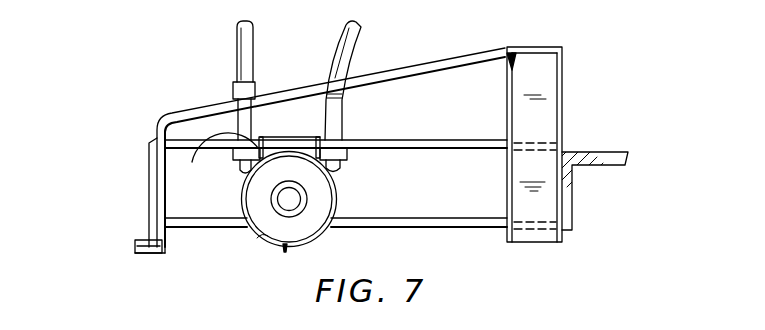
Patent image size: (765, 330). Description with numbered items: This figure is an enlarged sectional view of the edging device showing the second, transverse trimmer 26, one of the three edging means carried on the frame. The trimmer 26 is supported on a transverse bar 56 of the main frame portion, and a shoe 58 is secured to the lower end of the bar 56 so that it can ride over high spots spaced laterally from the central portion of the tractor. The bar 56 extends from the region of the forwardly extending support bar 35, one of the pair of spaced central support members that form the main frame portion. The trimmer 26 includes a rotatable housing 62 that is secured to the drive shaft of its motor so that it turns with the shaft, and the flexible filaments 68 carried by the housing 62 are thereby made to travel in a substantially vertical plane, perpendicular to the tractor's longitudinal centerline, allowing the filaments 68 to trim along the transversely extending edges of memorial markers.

The transverse bar 56 is at (425, 64).
The support bar 35 is at (585, 152).
The flexible filaments 68 is at (213, 140).
The rotatable housing 62 is at (392, 157).
The second trimmer 26 is at (281, 250).
The shoe 58 is at (140, 262).